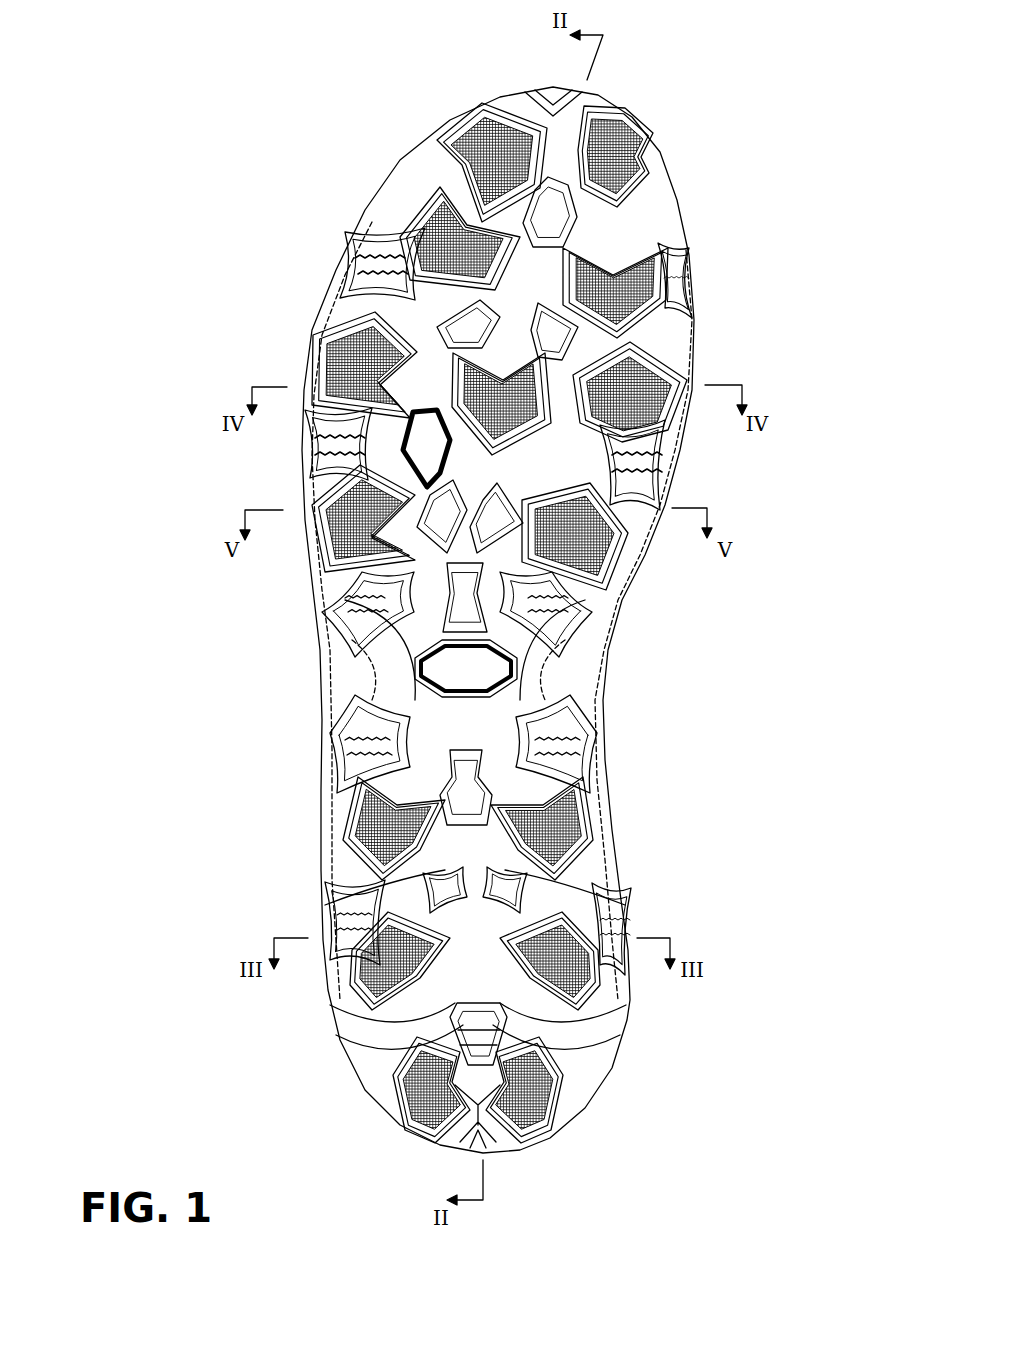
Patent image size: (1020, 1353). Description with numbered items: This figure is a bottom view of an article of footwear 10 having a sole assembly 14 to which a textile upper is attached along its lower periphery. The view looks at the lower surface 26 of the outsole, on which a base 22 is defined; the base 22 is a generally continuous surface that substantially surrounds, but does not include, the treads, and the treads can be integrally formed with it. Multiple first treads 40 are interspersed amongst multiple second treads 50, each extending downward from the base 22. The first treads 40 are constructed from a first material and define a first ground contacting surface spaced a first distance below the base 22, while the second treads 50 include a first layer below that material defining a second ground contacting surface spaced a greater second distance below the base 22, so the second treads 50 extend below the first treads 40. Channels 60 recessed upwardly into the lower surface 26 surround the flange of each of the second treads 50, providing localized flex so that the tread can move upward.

The article of footwear 10 is at (846, 98).
The sole assembly 14 is at (333, 265).
The base 22 is at (330, 605).
The lower surface 26 is at (590, 863).
The first treads 40 is at (553, 105).
The second treads 50 is at (430, 242).
The channels 60 is at (440, 322).